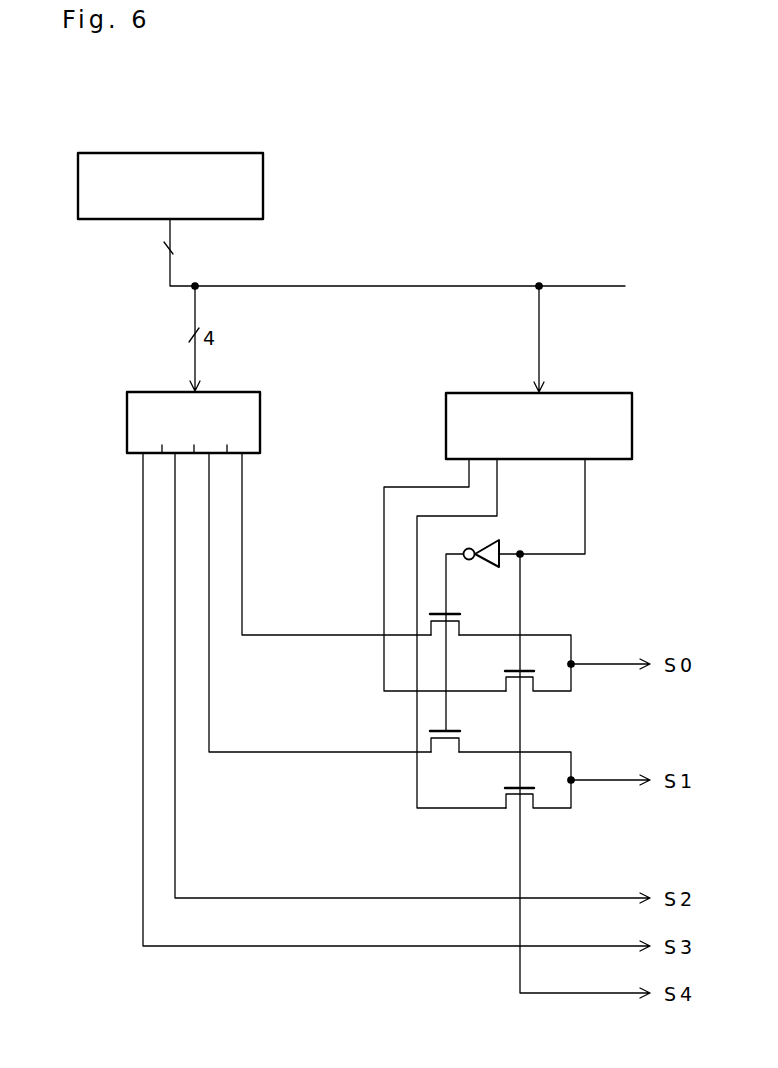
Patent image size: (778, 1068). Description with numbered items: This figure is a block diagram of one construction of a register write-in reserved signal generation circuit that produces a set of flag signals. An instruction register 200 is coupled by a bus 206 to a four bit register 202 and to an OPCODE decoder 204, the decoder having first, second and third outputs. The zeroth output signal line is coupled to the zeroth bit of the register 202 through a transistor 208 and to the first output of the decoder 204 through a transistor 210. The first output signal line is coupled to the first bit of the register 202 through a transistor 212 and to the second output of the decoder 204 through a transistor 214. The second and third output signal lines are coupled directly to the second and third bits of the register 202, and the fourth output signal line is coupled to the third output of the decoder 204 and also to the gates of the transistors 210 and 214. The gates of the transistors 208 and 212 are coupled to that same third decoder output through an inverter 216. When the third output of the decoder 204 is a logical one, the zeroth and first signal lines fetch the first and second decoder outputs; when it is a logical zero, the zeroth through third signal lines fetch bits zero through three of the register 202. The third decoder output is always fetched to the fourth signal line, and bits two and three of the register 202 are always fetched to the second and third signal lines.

The instruction register 200 is at (178, 153).
The four bit register 202 is at (262, 398).
The OPCODE decoder 204 is at (595, 393).
The bus 206 is at (403, 286).
The transistor 208 is at (461, 627).
The transistor 210 is at (533, 683).
The transistor 212 is at (460, 745).
The transistor 214 is at (533, 797).
The inverter 216 is at (499, 540).